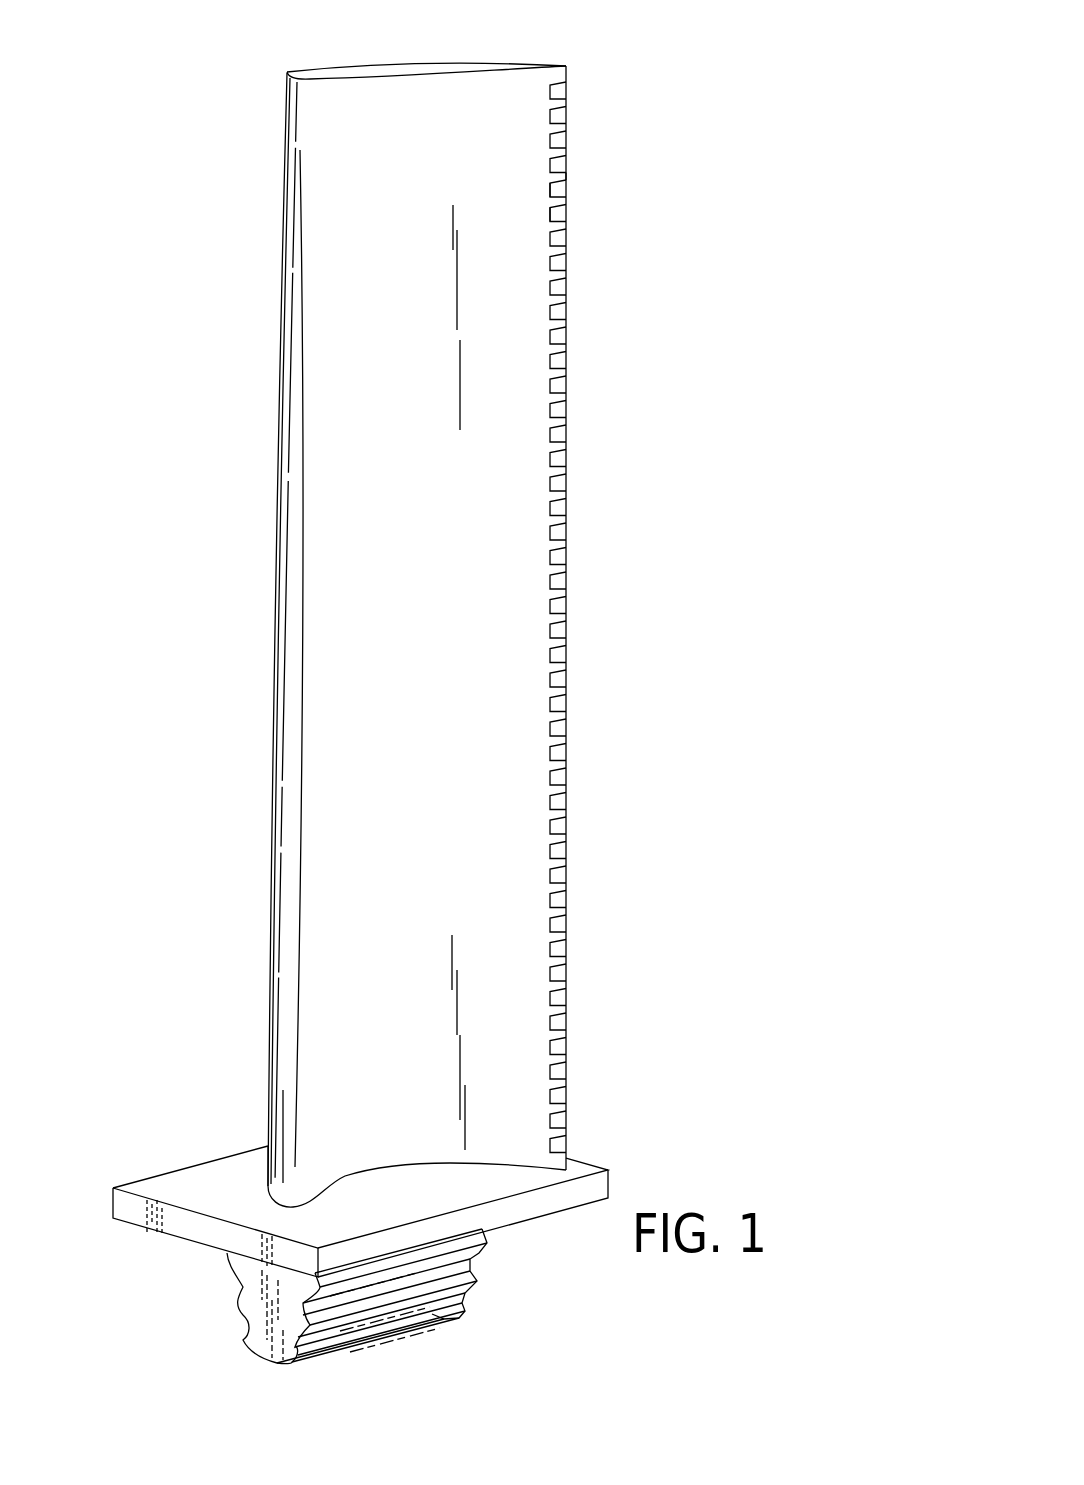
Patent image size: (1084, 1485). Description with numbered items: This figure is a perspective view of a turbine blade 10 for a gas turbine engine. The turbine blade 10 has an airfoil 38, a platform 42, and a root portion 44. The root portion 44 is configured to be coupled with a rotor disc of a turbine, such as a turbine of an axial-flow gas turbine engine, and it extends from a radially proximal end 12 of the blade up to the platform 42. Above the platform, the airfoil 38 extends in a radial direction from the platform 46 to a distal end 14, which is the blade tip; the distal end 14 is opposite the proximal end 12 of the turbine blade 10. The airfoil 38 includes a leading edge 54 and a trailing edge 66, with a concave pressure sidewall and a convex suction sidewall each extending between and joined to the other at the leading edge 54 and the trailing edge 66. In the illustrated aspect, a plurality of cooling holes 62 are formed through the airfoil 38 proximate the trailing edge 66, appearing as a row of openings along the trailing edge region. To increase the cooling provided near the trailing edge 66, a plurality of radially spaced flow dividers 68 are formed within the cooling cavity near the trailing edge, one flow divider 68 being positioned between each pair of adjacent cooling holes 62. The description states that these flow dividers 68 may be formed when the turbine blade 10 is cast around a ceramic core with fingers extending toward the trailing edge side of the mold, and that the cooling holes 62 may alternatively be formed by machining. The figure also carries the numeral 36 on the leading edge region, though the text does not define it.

The turbine blade 10 is at (176, 382).
The radially proximal end 12 is at (394, 1352).
The distal end 14 is at (388, 49).
The leading edge 36 is at (276, 608).
The airfoil 38 is at (438, 700).
The platform 42 is at (202, 1228).
The root portion 44 is at (285, 1290).
The platform 46 is at (390, 1208).
The leading edge 54 is at (273, 790).
The cooling holes 62 is at (571, 89).
The trailing edge 66 is at (568, 185).
The radially spaced flow dividers 68 is at (548, 221).